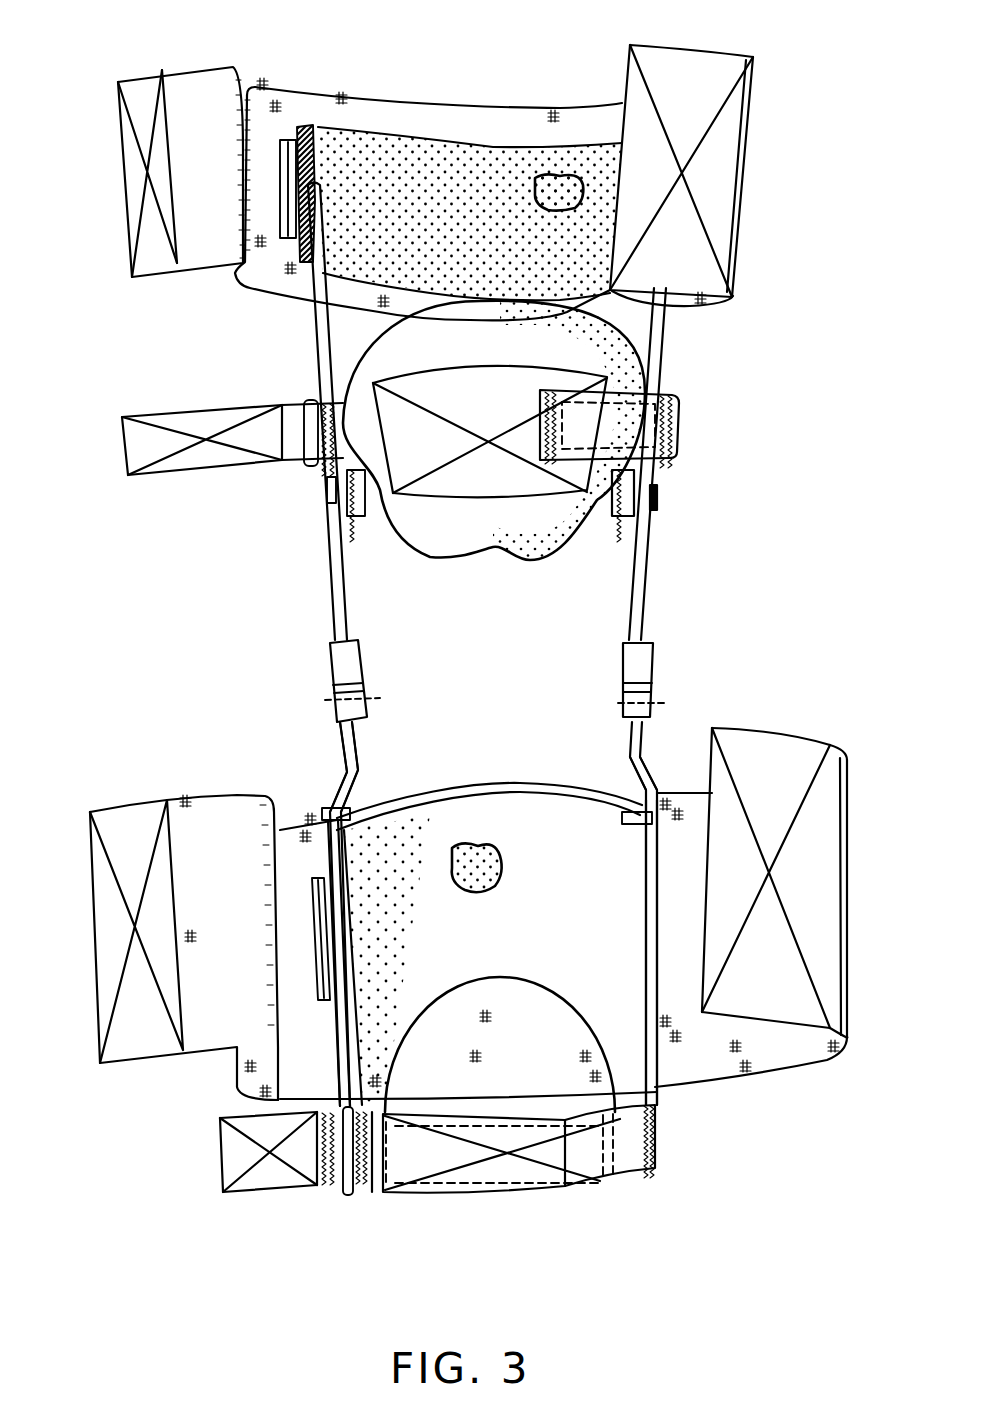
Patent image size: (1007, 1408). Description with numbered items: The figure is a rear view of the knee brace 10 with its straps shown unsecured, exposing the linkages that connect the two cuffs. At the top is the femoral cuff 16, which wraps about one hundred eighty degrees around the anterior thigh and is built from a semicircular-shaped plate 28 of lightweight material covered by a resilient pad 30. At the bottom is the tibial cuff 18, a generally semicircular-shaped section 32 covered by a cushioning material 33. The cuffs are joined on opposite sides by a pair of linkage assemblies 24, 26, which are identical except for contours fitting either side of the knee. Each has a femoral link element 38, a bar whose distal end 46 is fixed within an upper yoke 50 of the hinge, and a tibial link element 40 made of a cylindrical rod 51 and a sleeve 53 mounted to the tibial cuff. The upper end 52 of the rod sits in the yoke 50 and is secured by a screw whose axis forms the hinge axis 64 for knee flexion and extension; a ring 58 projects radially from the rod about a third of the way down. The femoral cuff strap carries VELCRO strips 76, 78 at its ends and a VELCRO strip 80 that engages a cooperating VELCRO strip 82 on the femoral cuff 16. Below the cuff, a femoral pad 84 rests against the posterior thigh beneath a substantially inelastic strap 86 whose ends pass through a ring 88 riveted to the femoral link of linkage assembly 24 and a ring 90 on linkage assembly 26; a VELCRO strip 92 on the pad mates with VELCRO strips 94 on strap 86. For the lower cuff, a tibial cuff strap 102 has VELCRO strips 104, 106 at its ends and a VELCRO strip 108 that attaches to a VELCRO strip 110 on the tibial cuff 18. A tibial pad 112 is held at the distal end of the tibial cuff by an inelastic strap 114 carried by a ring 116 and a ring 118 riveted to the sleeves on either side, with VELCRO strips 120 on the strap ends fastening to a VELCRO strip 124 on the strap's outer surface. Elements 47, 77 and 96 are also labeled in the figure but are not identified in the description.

The knee brace 10 is at (197, 647).
The femoral cuff 16 is at (503, 163).
The tibial cuff 18 is at (505, 822).
The linkage assembly 24 is at (322, 618).
The linkage assembly 26 is at (676, 614).
The semicircular-shaped plate 28 is at (560, 178).
The resilient pad 30 is at (312, 122).
The semicircular-shaped section 32 is at (485, 872).
The cushioning material 33 is at (547, 930).
The femoral link element 38 is at (316, 322).
The tibial link element 40 is at (668, 733).
The distal end 46 is at (330, 642).
The side bar 47 is at (360, 345).
The upper yoke 50 is at (330, 678).
The cylindrical rod 51 is at (360, 780).
The upper end 52 is at (328, 747).
The sleeve 53 is at (322, 830).
The ring 58 is at (335, 812).
The hinge axis 64 is at (320, 700).
The VELCRO strip 76 is at (142, 182).
The cross-stitched center of knee pad 77 is at (395, 485).
The VELCRO strip 78 is at (712, 75).
The VELCRO strip 80 is at (280, 176).
The VELCRO strip 82 is at (283, 127).
The femoral pad 84 is at (380, 352).
The strap 86 is at (300, 458).
The ring 88 is at (312, 400).
The ring 90 is at (668, 460).
The VELCRO strip 92 is at (478, 488).
The VELCRO strips 94 is at (208, 452).
The stitching 96 is at (665, 392).
The tibial cuff strap 102 is at (226, 805).
The VELCRO strip 104 is at (137, 1045).
The VELCRO strip 106 is at (780, 765).
The VELCRO strip 108 is at (312, 918).
The VELCRO strip 110 is at (338, 960).
The tibial pad 112 is at (458, 1197).
The strap 114 is at (328, 1192).
The ring 116 is at (350, 1197).
The ring 118 is at (657, 1172).
The VELCRO strips 120 is at (252, 1190).
The VELCRO strip 124 is at (522, 1188).